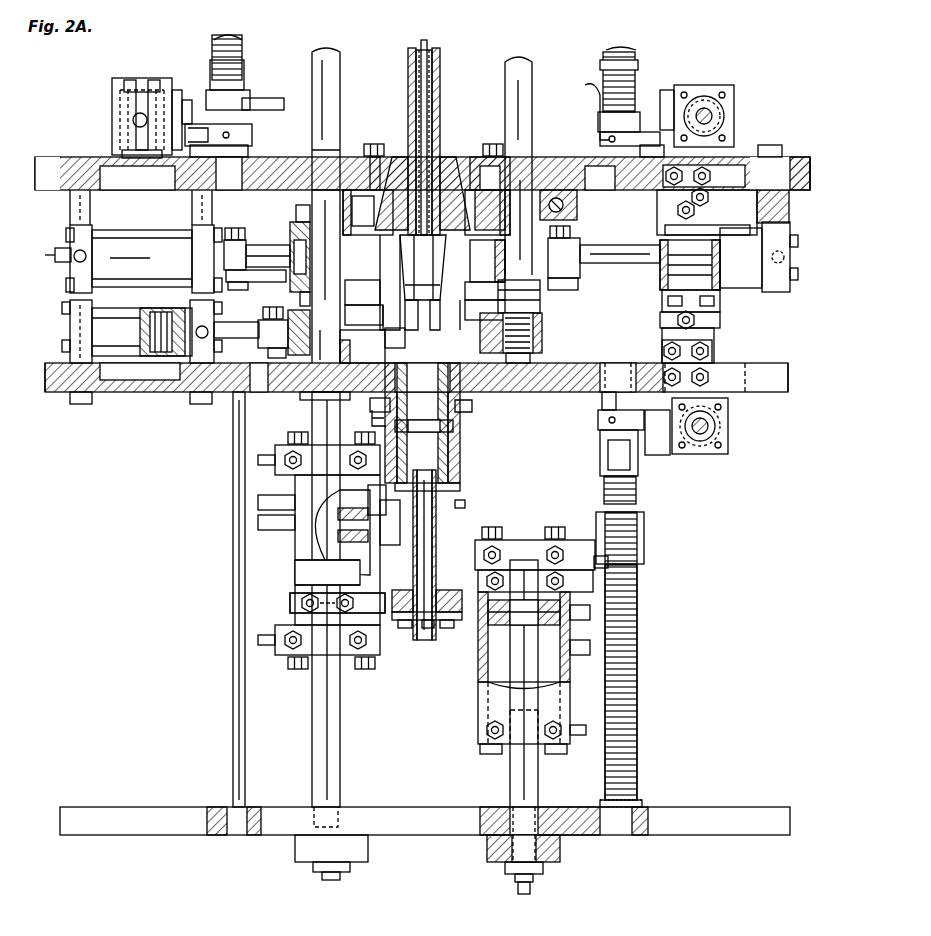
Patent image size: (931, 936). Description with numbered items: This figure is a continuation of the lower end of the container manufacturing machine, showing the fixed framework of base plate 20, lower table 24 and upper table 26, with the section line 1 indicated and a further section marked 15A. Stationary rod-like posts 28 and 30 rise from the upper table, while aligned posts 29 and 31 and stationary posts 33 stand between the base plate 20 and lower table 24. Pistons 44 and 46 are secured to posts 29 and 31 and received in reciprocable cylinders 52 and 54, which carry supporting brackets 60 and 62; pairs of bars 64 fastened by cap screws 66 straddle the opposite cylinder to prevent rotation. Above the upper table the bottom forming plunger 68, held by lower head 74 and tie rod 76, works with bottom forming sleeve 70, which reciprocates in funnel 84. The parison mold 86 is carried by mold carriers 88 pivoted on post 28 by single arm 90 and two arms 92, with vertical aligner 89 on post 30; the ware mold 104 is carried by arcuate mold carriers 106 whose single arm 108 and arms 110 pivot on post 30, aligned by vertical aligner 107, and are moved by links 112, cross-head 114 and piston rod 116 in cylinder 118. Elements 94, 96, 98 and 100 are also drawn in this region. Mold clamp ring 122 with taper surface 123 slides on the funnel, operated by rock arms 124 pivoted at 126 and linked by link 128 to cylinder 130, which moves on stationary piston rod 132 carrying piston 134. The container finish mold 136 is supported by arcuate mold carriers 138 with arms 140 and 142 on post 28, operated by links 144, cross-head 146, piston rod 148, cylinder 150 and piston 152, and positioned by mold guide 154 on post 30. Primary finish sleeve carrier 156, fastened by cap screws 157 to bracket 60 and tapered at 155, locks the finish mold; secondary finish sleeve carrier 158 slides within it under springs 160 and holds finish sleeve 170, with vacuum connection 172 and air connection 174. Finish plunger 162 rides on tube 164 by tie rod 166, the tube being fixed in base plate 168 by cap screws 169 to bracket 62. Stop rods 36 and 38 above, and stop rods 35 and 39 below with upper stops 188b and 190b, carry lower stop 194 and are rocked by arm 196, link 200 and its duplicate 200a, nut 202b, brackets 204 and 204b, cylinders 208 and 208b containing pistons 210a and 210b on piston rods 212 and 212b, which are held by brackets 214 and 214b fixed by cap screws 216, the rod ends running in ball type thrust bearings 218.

The section line 1— 1 is at (43, 262).
The section line 15A is at (100, 120).
The base plate 20 is at (148, 820).
The lower table 24 is at (170, 403).
The upper table 26 is at (68, 190).
The rod-like post 28 is at (340, 72).
The rod-like post 29 is at (312, 413).
The rod-like post 30 is at (505, 72).
The rod-like post 31 is at (538, 500).
The stationary posts 33 is at (232, 611).
The stop rod 35 is at (637, 611).
The stop rod 36 is at (212, 43).
The stop rod 38 is at (636, 52).
The stop rod 39 is at (636, 487).
The piston 44 is at (345, 546).
The piston 46 is at (560, 598).
The cylinder 52 is at (285, 609).
The cylinder 54 is at (486, 703).
The supporting bracket 60 is at (380, 485).
The supporting bracket 62 is at (478, 670).
The bars 64 is at (300, 572).
The cap screws 66 is at (322, 602).
The bottom forming plunger 68 is at (416, 40).
The bottom forming sleeve 70 is at (440, 108).
The lower head 74 is at (423, 267).
The tie rod 76 is at (428, 40).
The funnel 84 is at (448, 148).
The parison mold 86 is at (422, 302).
The mold carriers 88 is at (378, 275).
The vertical aligner 89 is at (478, 200).
The single arm 90 is at (282, 240).
The arms 92 is at (294, 228).
The bracket 94 is at (248, 278).
The stop block 96 is at (232, 240).
The pivot bracket 98 is at (66, 285).
The air cylinder 100 is at (150, 250).
The ware mold 104 is at (433, 320).
The arcuate mold carriers 106 is at (485, 288).
The vertical aligner 107 is at (296, 215).
The single arm 108 is at (486, 255).
The arms 110 is at (540, 280).
The links 112 is at (566, 270).
The cross-head 114 is at (570, 283).
The piston rod 116 is at (596, 262).
The cylinder 118 is at (740, 265).
The mold clamp ring 122 is at (382, 205).
The taper surface 123 is at (392, 282).
The rock arms 124 is at (488, 160).
The pivot 126 is at (572, 205).
The link 128 is at (710, 217).
The cylinder 130 is at (675, 282).
The stationary piston rod 132 is at (668, 300).
The piston 134 is at (700, 254).
The container finish mold 136 is at (404, 324).
The arcuate mold carriers 138 is at (383, 345).
The arms 140 is at (364, 308).
The single arm 142 is at (298, 312).
The links 144 is at (282, 348).
The cross-head 146 is at (268, 322).
The piston rod 148 is at (228, 320).
The cylinder 150 is at (178, 362).
The piston 152 is at (175, 302).
The mold guide 154 is at (545, 330).
The taper 155 is at (300, 398).
The primary finish sleeve carrier 156 is at (452, 450).
The cap screws 157 is at (468, 500).
The secondary finish sleeve carrier 158 is at (385, 405).
The springs 160 is at (458, 424).
The finish plunger 162 is at (425, 308).
The tube 164 is at (440, 532).
The tie rod 166 is at (436, 548).
The base plate 168 is at (412, 596).
The cap screws 169 is at (426, 630).
The finish sleeve 170 is at (485, 306).
The container finish vacuum connection 172 is at (380, 413).
The secondary expansion air connection 174 is at (462, 407).
The upper stop 188b is at (645, 533).
The upper stop 190b is at (600, 463).
The lower stop 194 is at (252, 100).
The arm 196 is at (252, 130).
The link 200 is at (178, 172).
The link 200a is at (690, 82).
The nut 202b is at (602, 402).
The bracket 204 is at (182, 90).
The bracket 204b is at (672, 452).
The cylinder 208 is at (114, 95).
The cylinder 208b is at (715, 433).
The piston 210a is at (712, 126).
The piston 210b is at (718, 430).
The piston rod 212 is at (134, 122).
The piston rod 212b is at (712, 420).
The brackets 214 is at (710, 196).
The brackets 214b is at (712, 350).
The cap screws 216 is at (160, 80).
The ball type thrust bearings 218 is at (248, 150).